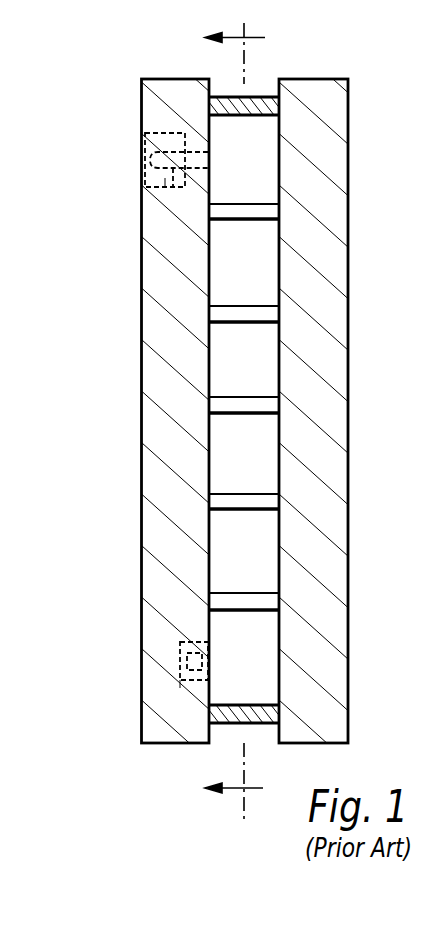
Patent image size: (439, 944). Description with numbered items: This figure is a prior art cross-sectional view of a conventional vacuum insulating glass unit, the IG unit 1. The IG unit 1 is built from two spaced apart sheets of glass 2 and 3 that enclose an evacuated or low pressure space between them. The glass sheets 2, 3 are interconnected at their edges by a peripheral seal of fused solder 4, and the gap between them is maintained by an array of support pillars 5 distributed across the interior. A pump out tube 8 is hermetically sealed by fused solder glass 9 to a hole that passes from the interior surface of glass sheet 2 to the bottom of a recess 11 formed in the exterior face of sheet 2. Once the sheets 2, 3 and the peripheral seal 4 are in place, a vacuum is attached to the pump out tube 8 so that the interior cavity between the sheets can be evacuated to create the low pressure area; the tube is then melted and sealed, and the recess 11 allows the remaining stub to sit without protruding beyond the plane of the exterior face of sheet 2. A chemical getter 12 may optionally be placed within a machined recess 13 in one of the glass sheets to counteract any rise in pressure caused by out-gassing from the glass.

The IG unit 1 is at (239, 422).
The sheet of glass 2 is at (152, 478).
The sheet of glass 3 is at (322, 311).
The peripheral seal of fused solder 4 is at (255, 105).
The support pillars 5 is at (243, 405).
The pump out tube 8 is at (152, 160).
The fused solder glass 9 is at (177, 141).
The recess 11 is at (165, 184).
The chemical getter 12 is at (198, 660).
The machined recess 13 is at (179, 690).